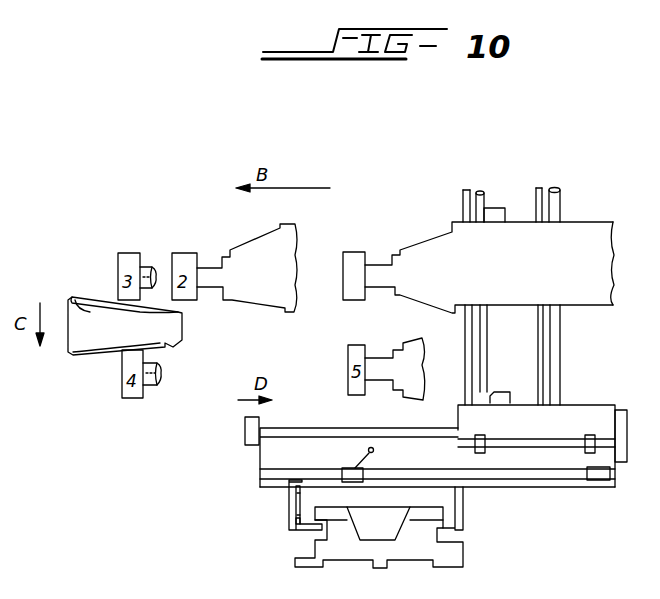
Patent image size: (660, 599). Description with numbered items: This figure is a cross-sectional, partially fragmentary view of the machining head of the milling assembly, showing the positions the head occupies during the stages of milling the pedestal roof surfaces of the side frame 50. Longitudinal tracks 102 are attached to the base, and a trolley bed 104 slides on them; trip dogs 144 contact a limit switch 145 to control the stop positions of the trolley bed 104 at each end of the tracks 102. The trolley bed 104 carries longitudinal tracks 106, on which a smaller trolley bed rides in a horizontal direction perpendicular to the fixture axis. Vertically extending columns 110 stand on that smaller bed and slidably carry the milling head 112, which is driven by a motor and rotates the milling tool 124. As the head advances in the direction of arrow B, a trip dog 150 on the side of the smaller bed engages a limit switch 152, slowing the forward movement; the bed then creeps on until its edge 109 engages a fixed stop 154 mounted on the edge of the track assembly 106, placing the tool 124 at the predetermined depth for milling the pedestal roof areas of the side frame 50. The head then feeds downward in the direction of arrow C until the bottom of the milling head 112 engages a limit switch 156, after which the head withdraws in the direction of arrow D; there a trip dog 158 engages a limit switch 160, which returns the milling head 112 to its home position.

The side frame 50 is at (70, 357).
The longitudinal tracks 102 is at (404, 527).
The trolley bed 104 is at (462, 505).
The longitudinal tracks 106 is at (346, 427).
The edge of trolley bed 109 is at (458, 414).
The vertically extending columns 110 is at (478, 193).
The milling head 112 is at (420, 242).
The milling tool 124 is at (366, 250).
The trip dogs 144 is at (292, 492).
The limit switch 145 is at (297, 528).
The trip dog 150 is at (478, 434).
The limit switch 152 is at (345, 469).
The fixed stop 154 is at (245, 437).
The limit switch 156 is at (503, 392).
The trip dog 158 is at (590, 434).
The limit switch 160 is at (604, 483).